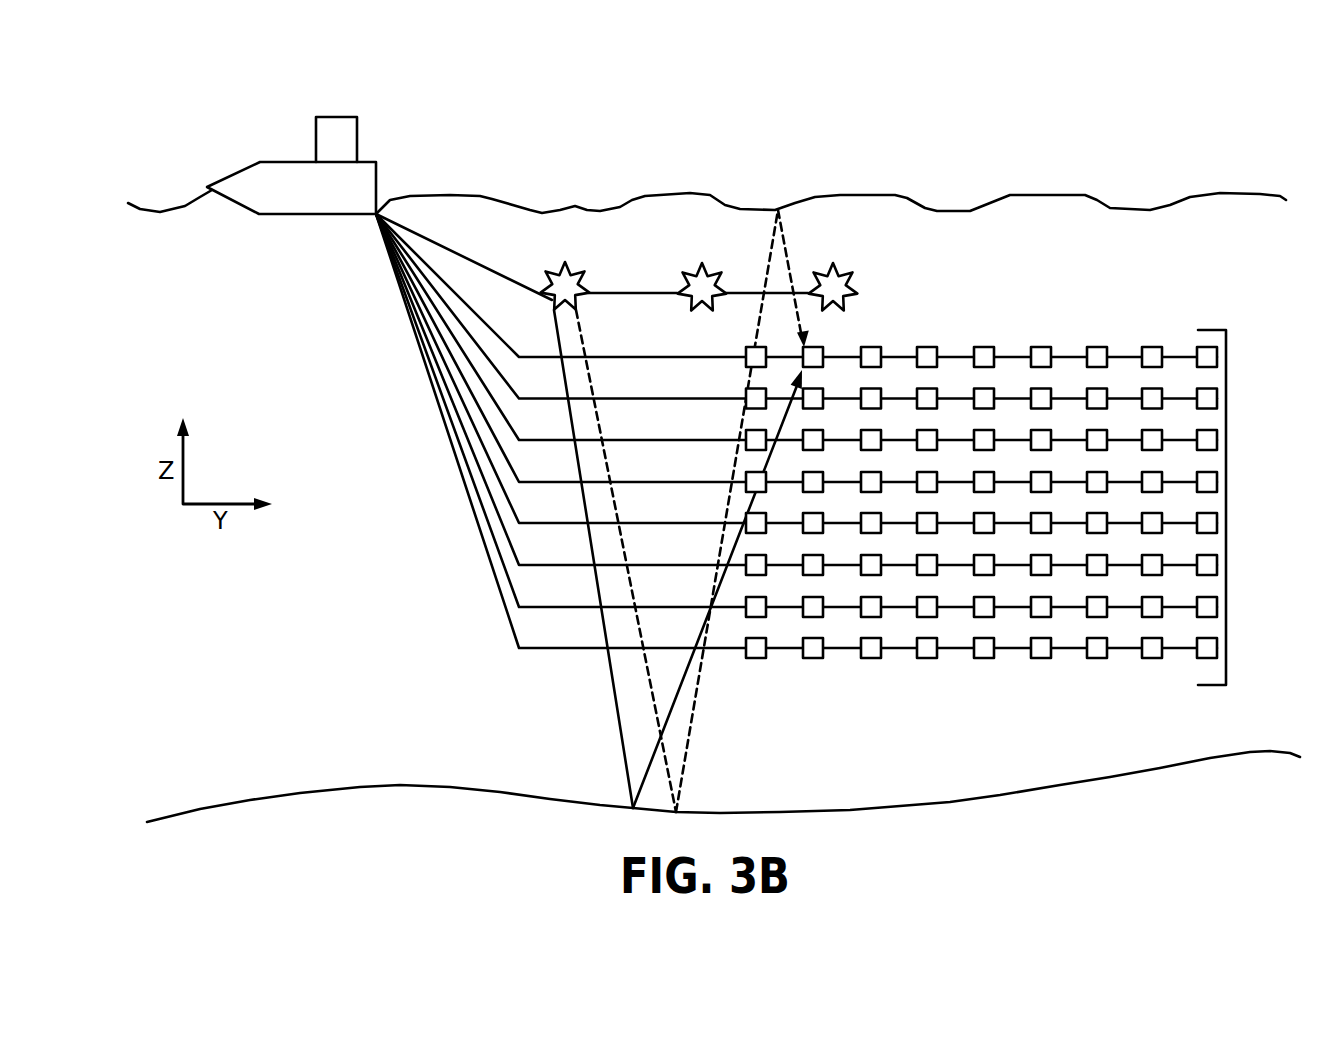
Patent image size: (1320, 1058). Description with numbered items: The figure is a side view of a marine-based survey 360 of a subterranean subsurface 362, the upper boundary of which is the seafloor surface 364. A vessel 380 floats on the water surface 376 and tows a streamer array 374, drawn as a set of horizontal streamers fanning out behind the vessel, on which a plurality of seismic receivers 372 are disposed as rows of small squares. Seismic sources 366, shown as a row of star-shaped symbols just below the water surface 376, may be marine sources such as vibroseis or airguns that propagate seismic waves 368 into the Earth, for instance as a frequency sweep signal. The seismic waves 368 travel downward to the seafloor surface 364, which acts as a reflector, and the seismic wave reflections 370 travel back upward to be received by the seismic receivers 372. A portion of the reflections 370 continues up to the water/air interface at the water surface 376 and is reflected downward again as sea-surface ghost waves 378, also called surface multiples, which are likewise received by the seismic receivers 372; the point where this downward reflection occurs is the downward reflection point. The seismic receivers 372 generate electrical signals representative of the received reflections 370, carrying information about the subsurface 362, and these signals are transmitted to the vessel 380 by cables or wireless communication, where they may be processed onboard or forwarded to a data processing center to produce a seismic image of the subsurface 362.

The marine-based survey 360 is at (193, 100).
The vessel 380 is at (335, 115).
The water surface 376 is at (1018, 193).
The seismic sources 366 is at (592, 298).
The seismic waves 368 is at (592, 381).
The seismic wave reflections 370 is at (737, 465).
The sea-surface ghost waves 378 is at (783, 252).
The seismic receivers 372 is at (1152, 345).
The streamer array 374 is at (1226, 502).
The seafloor surface 364 is at (1060, 786).
The subterranean subsurface 362 is at (300, 838).